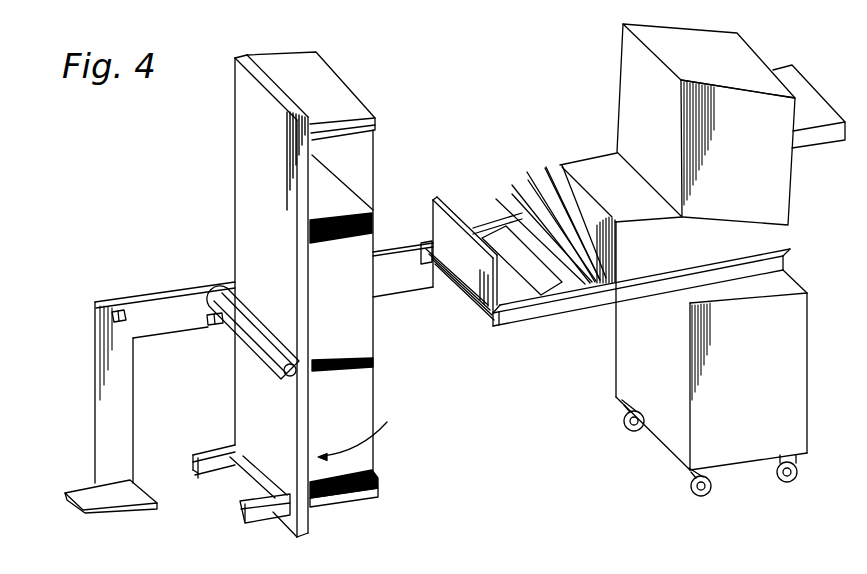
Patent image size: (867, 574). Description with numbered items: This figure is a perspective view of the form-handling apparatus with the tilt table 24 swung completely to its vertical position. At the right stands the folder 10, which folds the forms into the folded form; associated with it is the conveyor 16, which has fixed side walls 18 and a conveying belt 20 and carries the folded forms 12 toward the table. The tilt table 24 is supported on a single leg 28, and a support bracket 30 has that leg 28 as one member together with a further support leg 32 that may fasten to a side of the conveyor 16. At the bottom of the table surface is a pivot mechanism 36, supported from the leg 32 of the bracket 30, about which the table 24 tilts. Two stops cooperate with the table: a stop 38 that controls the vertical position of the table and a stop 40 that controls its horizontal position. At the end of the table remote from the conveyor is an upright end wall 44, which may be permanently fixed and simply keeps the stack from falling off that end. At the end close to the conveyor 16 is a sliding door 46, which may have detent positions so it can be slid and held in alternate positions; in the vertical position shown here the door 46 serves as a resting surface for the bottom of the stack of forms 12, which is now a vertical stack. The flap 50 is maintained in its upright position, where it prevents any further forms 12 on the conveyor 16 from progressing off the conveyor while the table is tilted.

The folder 10 is at (792, 174).
The folded forms 12 is at (544, 165).
The conveyor 16 is at (535, 320).
The fixed side walls 18 is at (580, 307).
The conveying belt 20 is at (472, 227).
The tilt table 24 is at (234, 181).
The leg 28 is at (102, 405).
The support bracket 30 is at (92, 300).
The support leg 32 is at (395, 258).
The pivot mechanism 36 is at (215, 287).
The stop 38 is at (214, 328).
The stop 40 is at (108, 318).
The upright end wall 44 is at (353, 103).
The sliding door 46 is at (362, 502).
The flap 50 is at (432, 198).